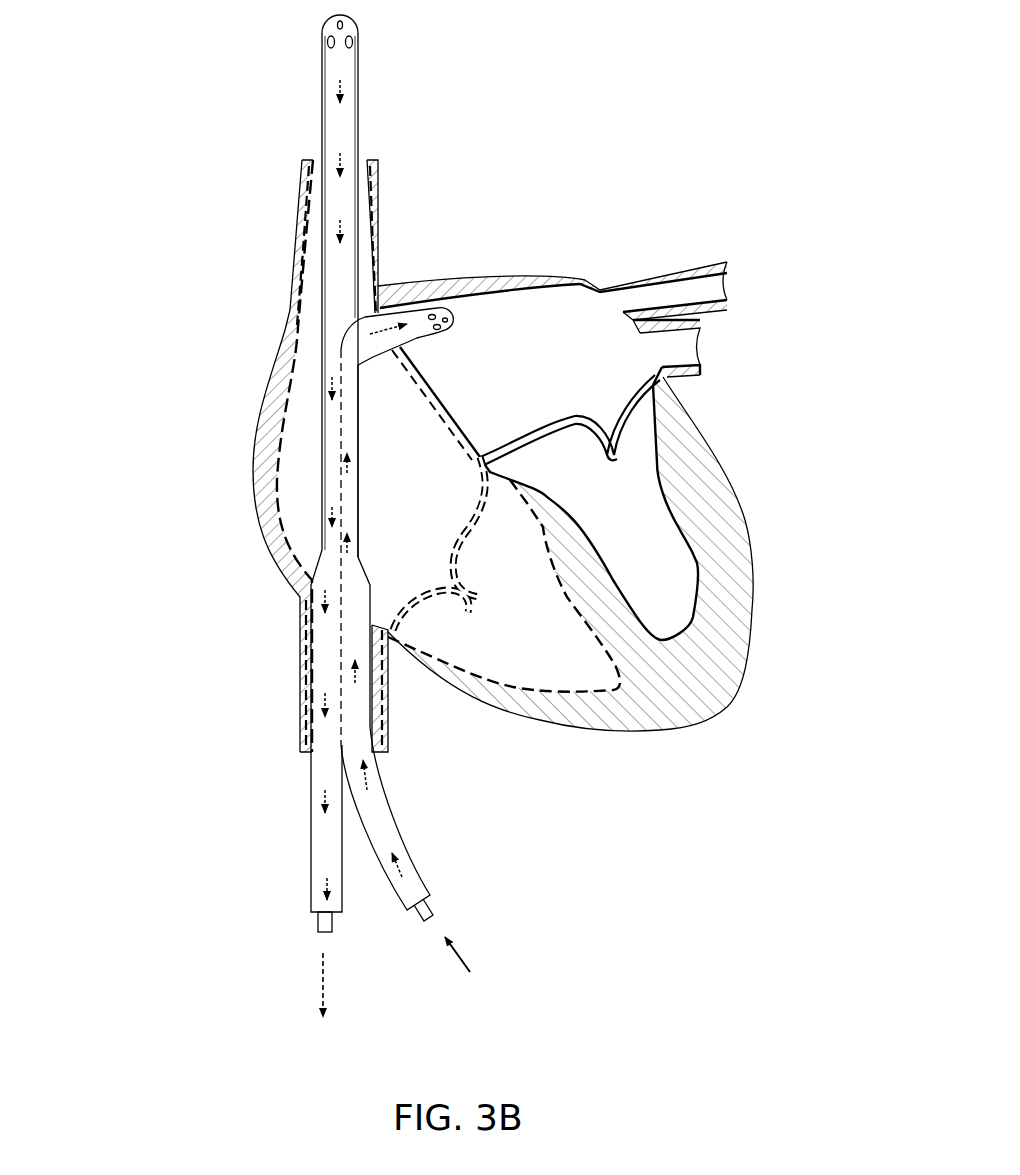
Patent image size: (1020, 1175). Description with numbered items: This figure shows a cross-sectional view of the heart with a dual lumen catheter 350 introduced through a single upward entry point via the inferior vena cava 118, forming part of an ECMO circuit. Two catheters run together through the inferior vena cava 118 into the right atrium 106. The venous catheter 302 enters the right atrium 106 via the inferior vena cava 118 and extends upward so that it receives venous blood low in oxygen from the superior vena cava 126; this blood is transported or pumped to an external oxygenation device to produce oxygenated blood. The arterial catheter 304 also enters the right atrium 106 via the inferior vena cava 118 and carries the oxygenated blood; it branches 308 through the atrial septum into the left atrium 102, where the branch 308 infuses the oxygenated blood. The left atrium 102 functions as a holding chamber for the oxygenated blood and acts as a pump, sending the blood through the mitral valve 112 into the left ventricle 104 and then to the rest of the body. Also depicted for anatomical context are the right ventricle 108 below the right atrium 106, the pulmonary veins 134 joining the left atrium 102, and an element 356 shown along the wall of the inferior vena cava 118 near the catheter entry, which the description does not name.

The dual lumen catheter 350 is at (178, 138).
The superior vena cava 126 is at (302, 215).
The branch 308 is at (422, 320).
The left atrium 102 is at (560, 327).
The pulmonary veins 134 is at (727, 290).
The right atrium 106 is at (377, 418).
The mitral valve 112 is at (630, 442).
The left ventricle 104 is at (657, 557).
The inferior vena cava 118 is at (303, 662).
The occluding element 356 is at (305, 705).
The venous catheter 302 is at (312, 810).
The arterial catheter 304 is at (390, 815).
The right ventricle 108 is at (567, 657).